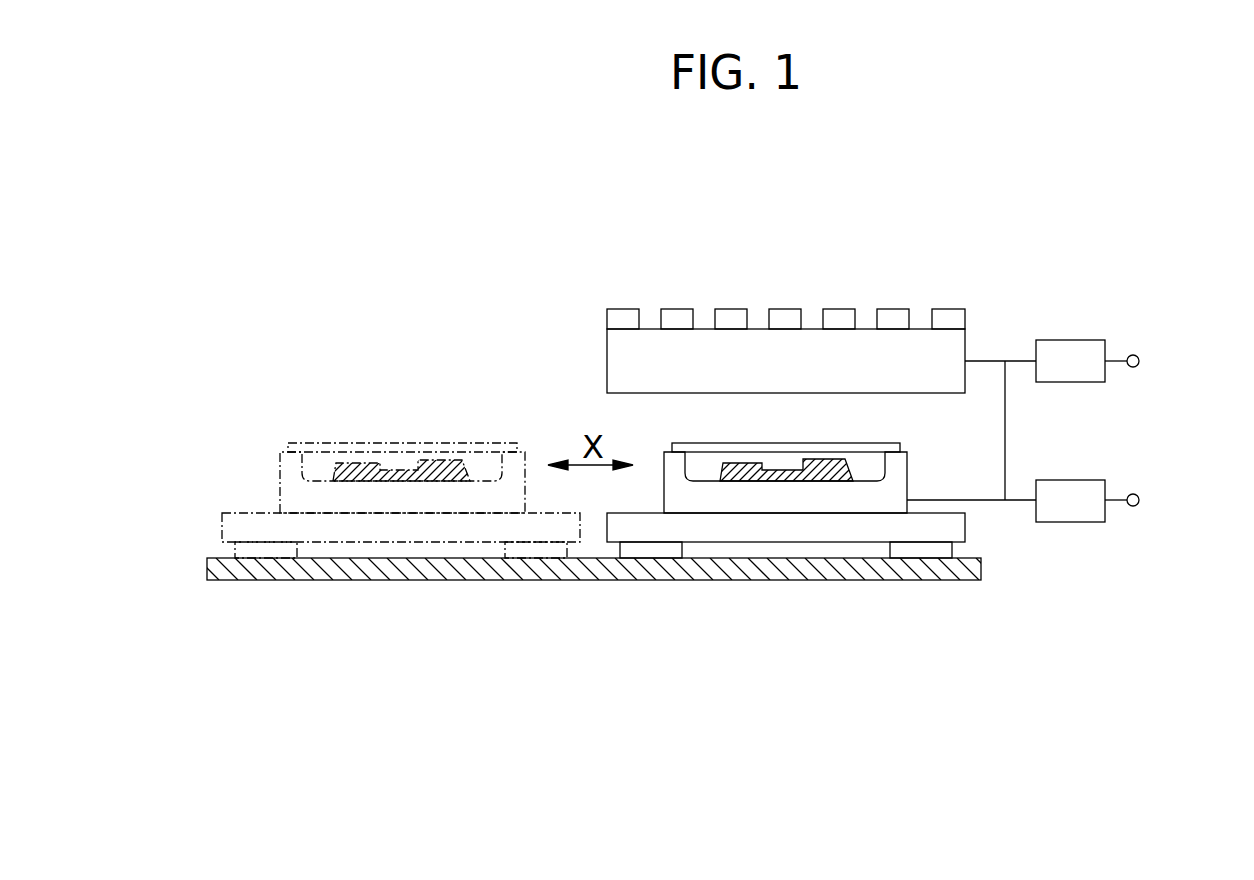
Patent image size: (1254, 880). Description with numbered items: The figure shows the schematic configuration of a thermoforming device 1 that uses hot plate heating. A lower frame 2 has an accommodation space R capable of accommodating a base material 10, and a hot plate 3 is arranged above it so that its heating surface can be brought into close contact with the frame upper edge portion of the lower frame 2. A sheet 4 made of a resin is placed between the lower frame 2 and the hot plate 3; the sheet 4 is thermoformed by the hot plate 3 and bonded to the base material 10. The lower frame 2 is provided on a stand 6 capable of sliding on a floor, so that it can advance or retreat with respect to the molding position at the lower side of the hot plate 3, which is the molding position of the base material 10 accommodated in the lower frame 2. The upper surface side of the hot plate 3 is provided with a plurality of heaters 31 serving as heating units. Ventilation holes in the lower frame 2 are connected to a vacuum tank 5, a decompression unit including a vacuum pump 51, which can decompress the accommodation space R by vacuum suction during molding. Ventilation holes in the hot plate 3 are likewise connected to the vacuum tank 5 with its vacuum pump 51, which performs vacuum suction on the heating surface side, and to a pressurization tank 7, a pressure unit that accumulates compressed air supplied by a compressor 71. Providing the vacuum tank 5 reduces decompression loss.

The thermoforming device 1 is at (1010, 306).
The lower frame 2 is at (262, 463).
The hot plate 3 is at (607, 342).
The heater 31 is at (950, 309).
The sheet 4 is at (322, 443).
The vacuum tank 5 is at (1105, 514).
The vacuum pump 51 is at (1133, 494).
The stand 6 is at (222, 541).
The pressurization tank 7 is at (1105, 374).
The compressor 71 is at (1133, 355).
The base material 10 is at (437, 460).
The accommodation space R is at (697, 472).